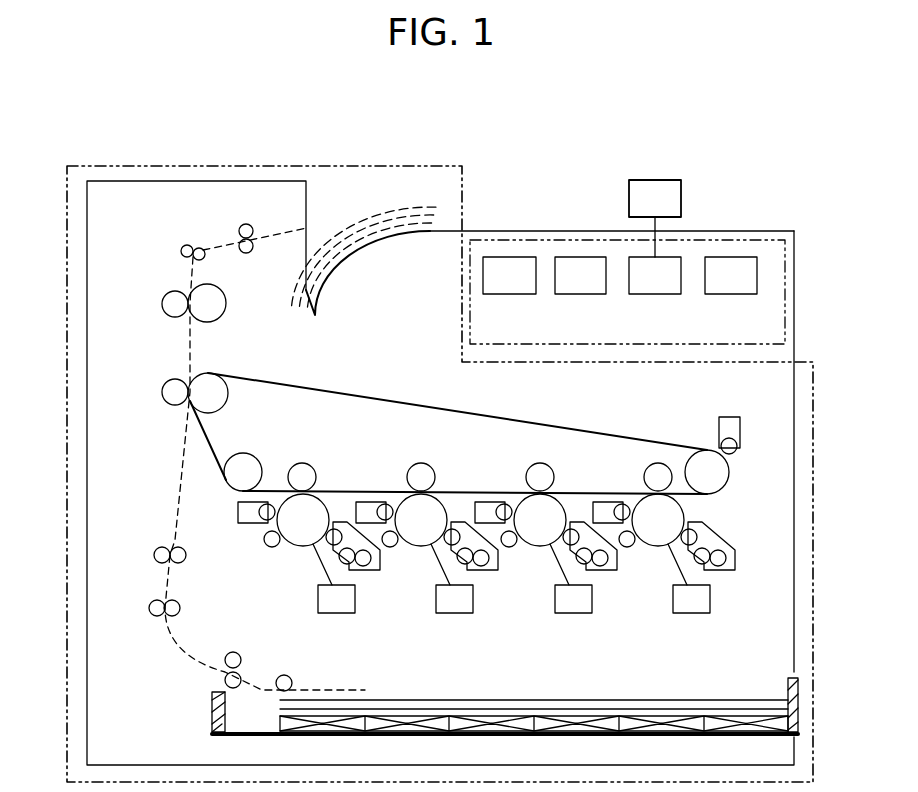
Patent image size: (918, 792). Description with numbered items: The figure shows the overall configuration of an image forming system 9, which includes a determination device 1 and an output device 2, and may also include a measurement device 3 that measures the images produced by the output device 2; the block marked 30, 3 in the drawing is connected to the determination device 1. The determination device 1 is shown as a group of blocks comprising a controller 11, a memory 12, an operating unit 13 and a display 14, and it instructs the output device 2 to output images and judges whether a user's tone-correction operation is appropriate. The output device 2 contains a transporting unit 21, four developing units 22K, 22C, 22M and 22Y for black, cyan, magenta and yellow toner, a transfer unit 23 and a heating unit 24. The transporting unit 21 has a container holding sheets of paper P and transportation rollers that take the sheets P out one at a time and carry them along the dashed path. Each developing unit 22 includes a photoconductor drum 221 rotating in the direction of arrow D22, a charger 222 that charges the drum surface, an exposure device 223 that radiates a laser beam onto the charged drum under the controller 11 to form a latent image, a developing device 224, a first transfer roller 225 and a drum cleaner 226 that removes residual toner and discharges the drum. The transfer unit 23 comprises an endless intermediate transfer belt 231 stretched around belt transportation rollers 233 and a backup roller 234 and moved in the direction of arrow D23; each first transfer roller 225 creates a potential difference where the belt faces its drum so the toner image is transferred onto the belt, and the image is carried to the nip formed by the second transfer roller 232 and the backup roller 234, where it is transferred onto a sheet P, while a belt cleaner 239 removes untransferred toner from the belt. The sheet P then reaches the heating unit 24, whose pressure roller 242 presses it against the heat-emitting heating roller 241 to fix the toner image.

The image forming system 9 is at (806, 218).
The determination device 1 is at (627, 263).
The output device 2 is at (800, 360).
The external host device 30 is at (614, 217).
The measurement device 3 is at (629, 207).
The controller 11 is at (522, 294).
The memory 12 is at (583, 294).
The operating unit 13 is at (664, 294).
The display 14 is at (735, 294).
The transporting unit 21 is at (226, 226).
The heating unit 24 is at (195, 274).
The heating roller 241 is at (226, 303).
The pressure roller 242 is at (162, 305).
The transfer unit 23 is at (396, 412).
The intermediate transfer belt 231 is at (548, 424).
The second transfer roller 232 is at (170, 384).
The belt transportation rollers 233 is at (227, 472).
The backup roller 234 is at (207, 380).
The belt cleaner 239 is at (733, 416).
The belt movement direction arrow D23 is at (462, 420).
The developing unit 22 is at (503, 548).
The developing unit for black 22K is at (309, 546).
The developing unit for cyan 22C is at (423, 602).
The developing unit for magenta 22M is at (541, 602).
The developing unit for yellow 22Y is at (651, 602).
The photoconductor drum 221 is at (293, 547).
The drum rotation direction arrow D22 is at (294, 505).
The charger 222 is at (265, 546).
The exposure device 223 is at (325, 614).
The developing device 224 is at (366, 572).
The first transfer roller 225 is at (306, 464).
The drum cleaner 226 is at (268, 505).
The sheet of paper P is at (720, 699).